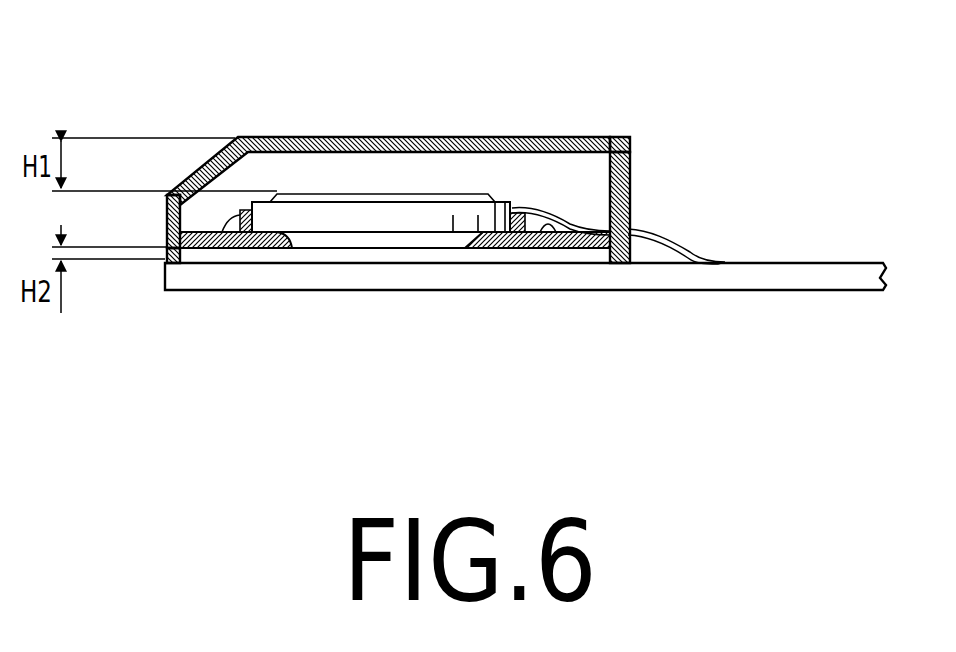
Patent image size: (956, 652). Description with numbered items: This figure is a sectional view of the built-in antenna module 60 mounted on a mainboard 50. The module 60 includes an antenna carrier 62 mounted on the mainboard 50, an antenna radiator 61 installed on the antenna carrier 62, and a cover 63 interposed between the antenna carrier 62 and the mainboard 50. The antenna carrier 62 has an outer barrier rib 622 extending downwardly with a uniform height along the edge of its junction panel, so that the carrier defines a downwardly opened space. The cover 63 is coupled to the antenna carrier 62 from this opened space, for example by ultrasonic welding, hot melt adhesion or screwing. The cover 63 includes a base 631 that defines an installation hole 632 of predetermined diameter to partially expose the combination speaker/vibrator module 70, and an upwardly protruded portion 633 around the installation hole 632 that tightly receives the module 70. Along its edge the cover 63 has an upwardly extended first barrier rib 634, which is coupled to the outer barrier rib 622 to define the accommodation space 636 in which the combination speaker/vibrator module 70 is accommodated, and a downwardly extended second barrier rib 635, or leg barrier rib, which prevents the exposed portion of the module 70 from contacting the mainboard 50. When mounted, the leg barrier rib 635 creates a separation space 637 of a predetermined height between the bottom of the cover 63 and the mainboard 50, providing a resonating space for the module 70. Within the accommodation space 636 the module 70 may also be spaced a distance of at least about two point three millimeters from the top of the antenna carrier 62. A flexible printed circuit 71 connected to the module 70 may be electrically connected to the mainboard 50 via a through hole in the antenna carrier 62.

The mainboard 50 is at (670, 292).
The built-in antenna module 60 is at (678, 147).
The antenna radiator 61 is at (514, 137).
The antenna carrier 62 is at (633, 178).
The outer barrier rib 622 is at (632, 150).
The cover 63 is at (565, 248).
The base 631 is at (535, 248).
The installation hole 632 is at (287, 248).
The upwardly protruded portion 633 is at (217, 248).
The first barrier rib 634 is at (167, 218).
The second barrier rib (leg barrier rib) 635 is at (163, 252).
The accommodation space 636 is at (358, 179).
The separation space 637 is at (441, 257).
The combination speaker/vibrator module 70 is at (437, 186).
The flexible printed circuit 71 is at (672, 240).